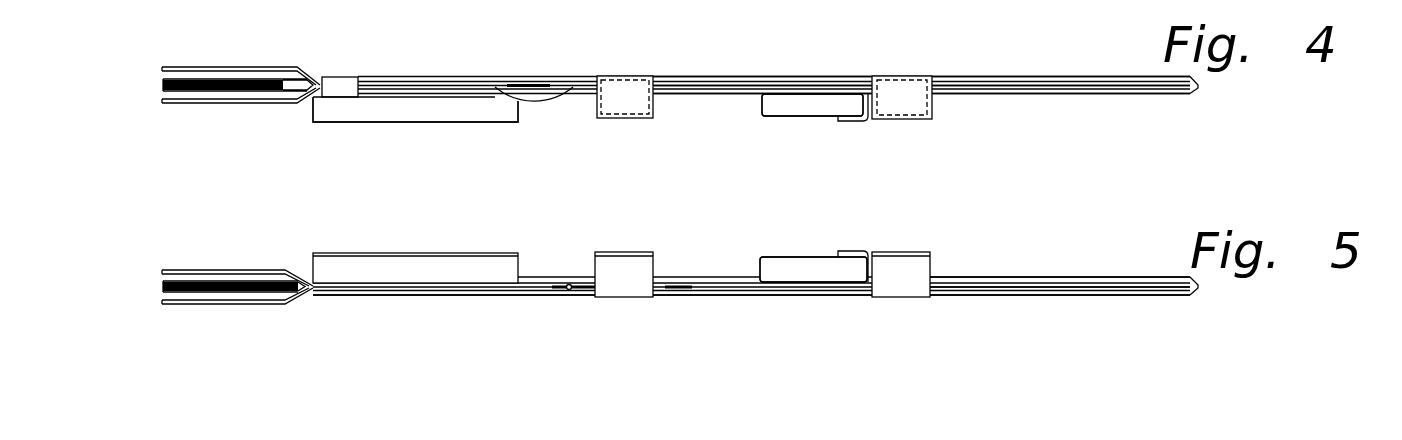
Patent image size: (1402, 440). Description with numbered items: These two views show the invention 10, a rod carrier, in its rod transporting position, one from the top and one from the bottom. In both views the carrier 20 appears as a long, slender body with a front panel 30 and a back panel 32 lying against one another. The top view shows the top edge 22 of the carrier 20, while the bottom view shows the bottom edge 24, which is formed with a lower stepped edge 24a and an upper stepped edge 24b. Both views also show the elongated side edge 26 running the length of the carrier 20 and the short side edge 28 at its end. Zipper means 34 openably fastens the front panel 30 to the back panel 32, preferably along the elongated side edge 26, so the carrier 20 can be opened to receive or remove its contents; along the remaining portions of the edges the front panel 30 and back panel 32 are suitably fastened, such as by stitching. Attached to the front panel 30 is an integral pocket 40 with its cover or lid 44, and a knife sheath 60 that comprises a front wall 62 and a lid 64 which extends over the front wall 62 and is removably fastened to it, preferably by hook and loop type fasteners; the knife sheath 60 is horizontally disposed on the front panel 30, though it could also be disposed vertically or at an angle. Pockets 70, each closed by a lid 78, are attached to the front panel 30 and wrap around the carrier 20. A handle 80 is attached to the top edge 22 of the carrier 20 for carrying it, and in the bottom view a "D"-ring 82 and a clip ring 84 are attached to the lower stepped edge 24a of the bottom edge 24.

In FIG. 4, the invention 10 is at (392, 51).
In FIG. 5, the invention 10 is at (272, 249).
In FIG. 4, the carrier 20 is at (736, 68).
In FIG. 4, the top edge 22 is at (768, 88).
In FIG. 5, the bottom edge 24 is at (727, 283).
In FIG. 5, the lower stepped edge 24a is at (1050, 287).
In FIG. 5, the upper stepped edge 24b is at (425, 287).
In FIG. 4, the elongated side edge 26 is at (160, 70).
In FIG. 5, the elongated side edge 26 is at (160, 270).
In FIG. 4, the short side edge 28 is at (1200, 87).
In FIG. 5, the short side edge 28 is at (1200, 287).
In FIG. 4, the front panel 30 is at (705, 97).
In FIG. 5, the front panel 30 is at (1008, 277).
In FIG. 4, the back panel 32 is at (703, 78).
In FIG. 5, the back panel 32 is at (1075, 297).
In FIG. 4, the zipper means 34 is at (162, 88).
In FIG. 5, the zipper means 34 is at (162, 288).
In FIG. 4, the integral pocket 40 is at (367, 132).
In FIG. 5, the integral pocket 40 is at (377, 241).
In FIG. 4, the cover or lid 44 is at (402, 108).
In FIG. 4, the knife sheath 60 is at (808, 126).
In FIG. 5, the knife sheath 60 is at (803, 245).
In FIG. 4, the front wall 62 is at (783, 117).
In FIG. 5, the front wall 62 is at (787, 255).
In FIG. 4, the lid 64 is at (848, 120).
In FIG. 5, the lid 64 is at (847, 253).
In FIG. 4, the pockets 70 is at (601, 61).
In FIG. 5, the pockets 70 is at (633, 273).
In FIG. 4, the lids 78 is at (625, 102).
In FIG. 4, the handle 80 is at (540, 90).
In FIG. 5, the "D"-ring 82 is at (682, 290).
In FIG. 5, the clip ring 84 is at (570, 285).